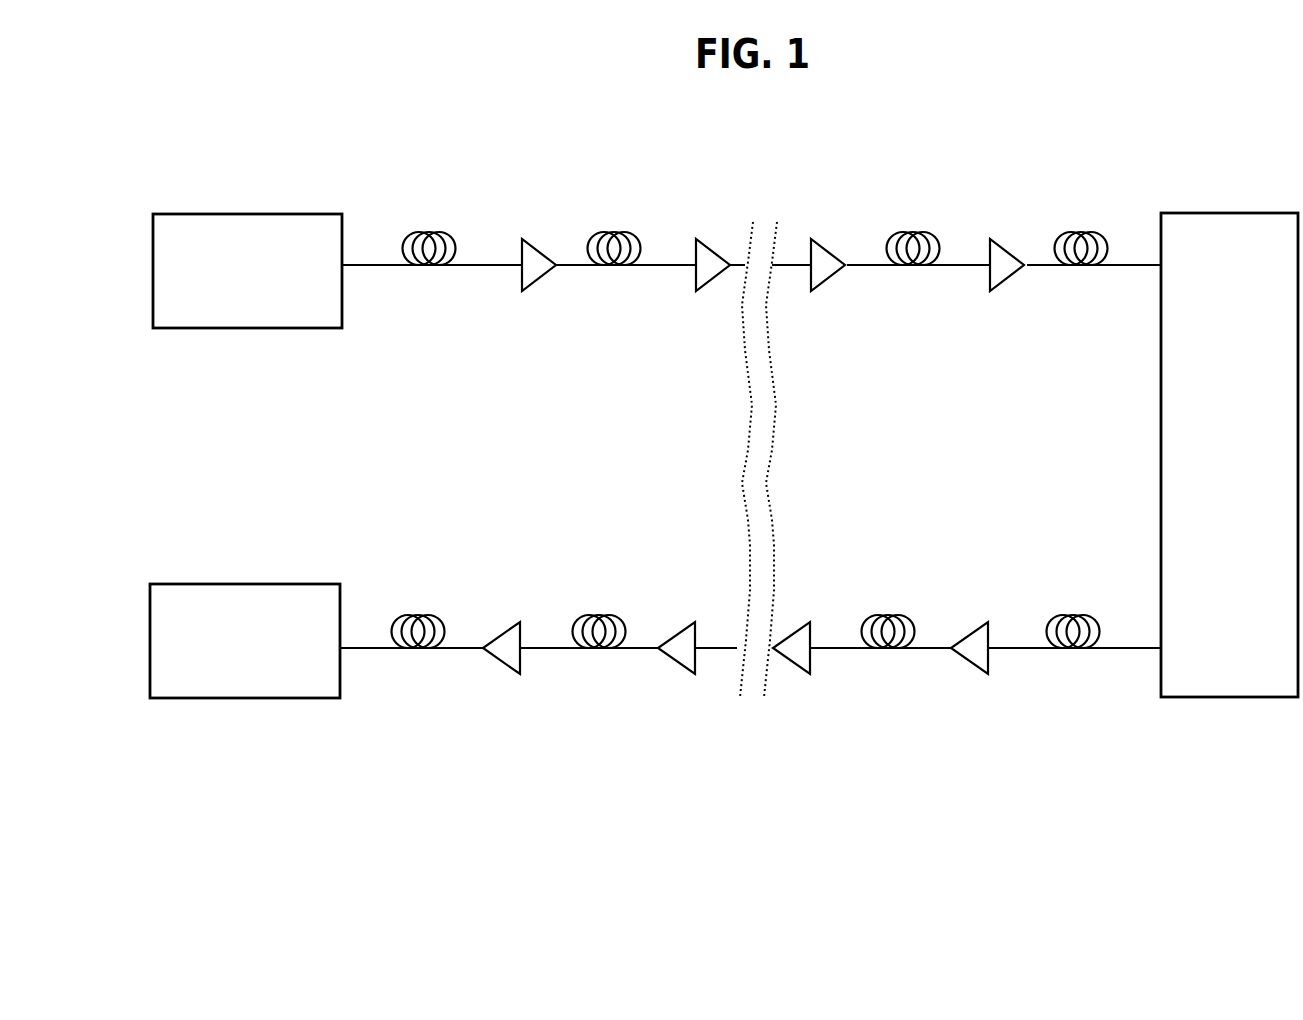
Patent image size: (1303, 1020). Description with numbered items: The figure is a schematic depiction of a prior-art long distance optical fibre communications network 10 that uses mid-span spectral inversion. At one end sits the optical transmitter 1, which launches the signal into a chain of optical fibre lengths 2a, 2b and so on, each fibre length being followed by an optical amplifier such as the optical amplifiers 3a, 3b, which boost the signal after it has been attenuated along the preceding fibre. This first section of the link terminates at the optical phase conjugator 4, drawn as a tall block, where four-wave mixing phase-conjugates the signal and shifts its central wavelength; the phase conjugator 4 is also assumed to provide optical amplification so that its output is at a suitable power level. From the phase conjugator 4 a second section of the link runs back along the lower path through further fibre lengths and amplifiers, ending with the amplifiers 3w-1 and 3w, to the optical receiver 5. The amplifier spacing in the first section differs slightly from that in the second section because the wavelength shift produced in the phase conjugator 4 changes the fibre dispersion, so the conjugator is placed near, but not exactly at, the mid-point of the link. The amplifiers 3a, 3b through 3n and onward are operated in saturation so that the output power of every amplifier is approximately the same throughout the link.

The optical transmitter 1 is at (225, 240).
The optical phase conjugator 4 is at (1248, 697).
The optical receiver 5 is at (265, 665).
The optical transmission system 10 is at (318, 790).
The optical fibre length 2a is at (422, 218).
The optical fibre length 2b is at (603, 217).
The optical amplifier 3a is at (518, 288).
The optical amplifier 3b is at (688, 284).
The optical amplifier 3n is at (832, 292).
The optical amplifier 3w-1 is at (668, 615).
The optical amplifier 3w is at (500, 626).